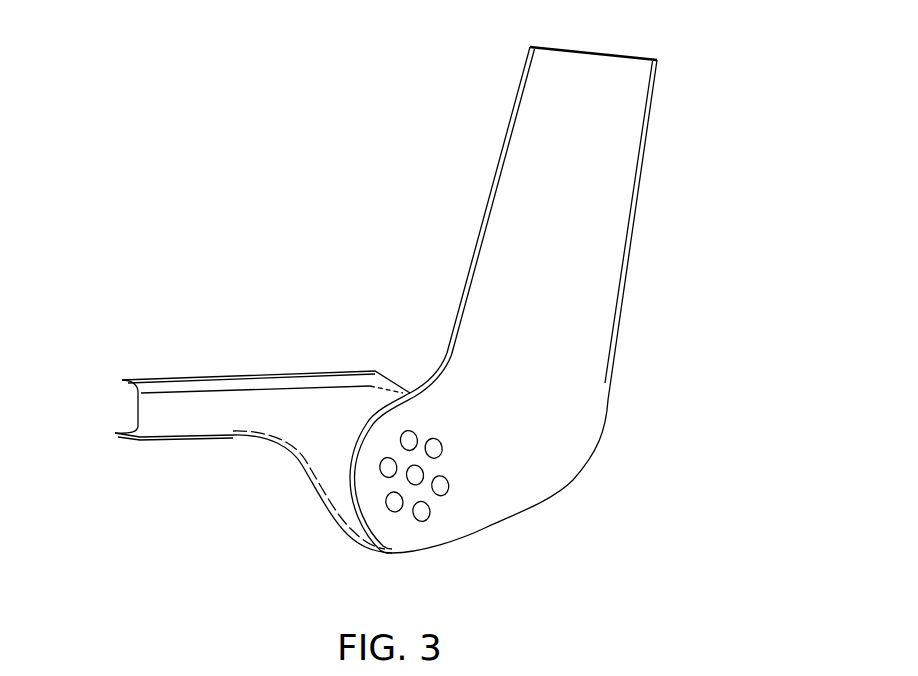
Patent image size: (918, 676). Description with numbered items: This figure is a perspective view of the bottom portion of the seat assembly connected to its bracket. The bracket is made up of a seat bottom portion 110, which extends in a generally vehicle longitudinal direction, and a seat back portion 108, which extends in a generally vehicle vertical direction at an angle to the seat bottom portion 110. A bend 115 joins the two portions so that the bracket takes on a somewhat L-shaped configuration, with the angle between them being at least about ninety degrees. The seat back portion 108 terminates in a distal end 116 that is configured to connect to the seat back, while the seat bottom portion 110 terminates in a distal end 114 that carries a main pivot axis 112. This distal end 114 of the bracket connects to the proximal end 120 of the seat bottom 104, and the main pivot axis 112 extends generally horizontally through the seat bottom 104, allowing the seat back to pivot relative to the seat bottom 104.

The seat bottom 104 is at (182, 370).
The seat back portion 108 is at (622, 183).
The seat bottom portion 110 is at (447, 535).
The main pivot axis 112 is at (527, 452).
The distal end 114 is at (363, 483).
The bend 115 is at (592, 423).
The distal end 116 is at (637, 73).
The proximal end 120 is at (318, 452).